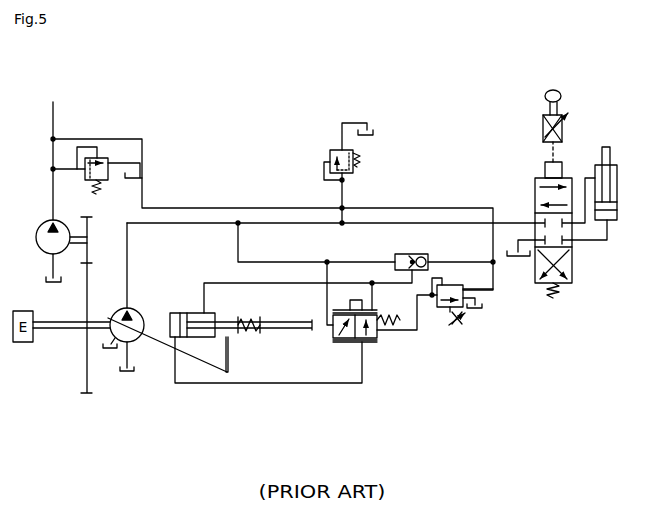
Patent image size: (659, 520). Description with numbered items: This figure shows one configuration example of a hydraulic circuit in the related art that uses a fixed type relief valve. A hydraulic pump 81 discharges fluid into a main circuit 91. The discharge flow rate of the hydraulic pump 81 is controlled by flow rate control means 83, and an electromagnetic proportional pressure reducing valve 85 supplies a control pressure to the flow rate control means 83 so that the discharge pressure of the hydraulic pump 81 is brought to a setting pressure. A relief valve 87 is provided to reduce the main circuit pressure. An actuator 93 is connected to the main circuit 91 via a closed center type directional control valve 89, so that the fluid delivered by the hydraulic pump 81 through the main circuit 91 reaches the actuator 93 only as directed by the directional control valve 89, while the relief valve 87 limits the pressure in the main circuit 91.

The hydraulic pump 81 is at (108, 318).
The flow rate control means 83 is at (332, 336).
The electromagnetic proportional pressure reducing valve 85 is at (434, 312).
The relief valve 87 is at (327, 150).
The closed center type directional control valve 89 is at (576, 260).
The main circuit 91 is at (289, 224).
The actuator 93 is at (622, 191).